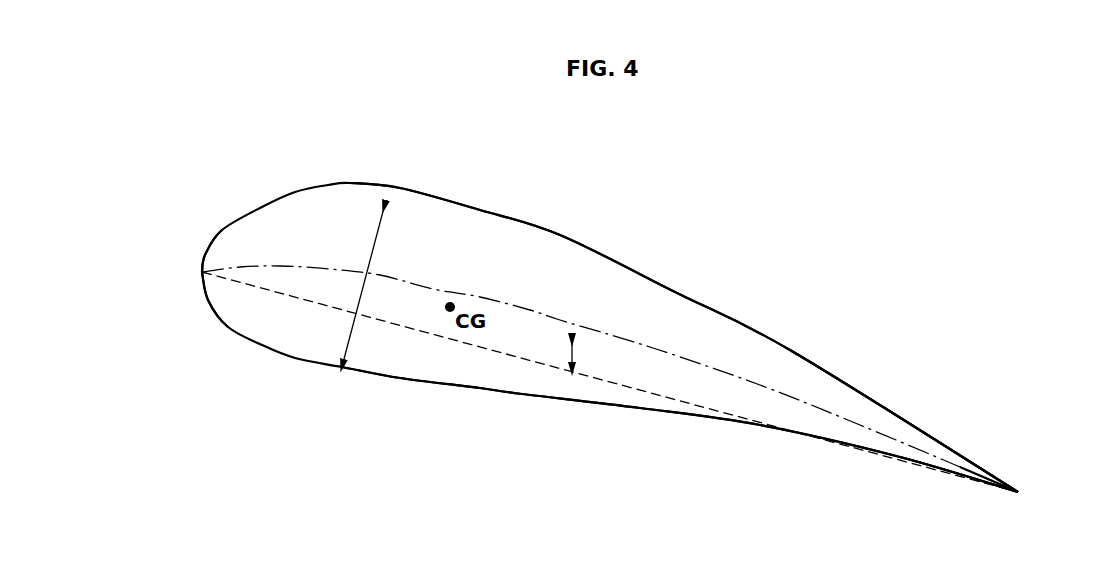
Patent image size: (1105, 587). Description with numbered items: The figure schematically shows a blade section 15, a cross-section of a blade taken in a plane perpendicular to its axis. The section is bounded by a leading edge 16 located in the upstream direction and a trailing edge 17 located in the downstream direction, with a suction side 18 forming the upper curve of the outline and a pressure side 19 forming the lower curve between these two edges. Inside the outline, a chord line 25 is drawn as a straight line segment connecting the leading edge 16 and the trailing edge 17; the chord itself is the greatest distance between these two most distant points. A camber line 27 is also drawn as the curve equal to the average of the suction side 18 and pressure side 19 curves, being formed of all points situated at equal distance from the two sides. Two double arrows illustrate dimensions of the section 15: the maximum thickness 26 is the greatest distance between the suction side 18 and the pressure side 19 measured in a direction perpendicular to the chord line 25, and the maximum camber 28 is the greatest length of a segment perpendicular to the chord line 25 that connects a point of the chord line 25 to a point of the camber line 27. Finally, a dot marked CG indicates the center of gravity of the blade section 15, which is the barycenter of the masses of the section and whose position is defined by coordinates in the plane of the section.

The blade section 15 is at (685, 230).
The leading edge 16 is at (199, 274).
The trailing edge 17 is at (1022, 494).
The suction side 18 is at (566, 231).
The pressure side 19 is at (524, 399).
The chord line 25 is at (505, 354).
The maximum thickness 26 is at (365, 292).
The camber line 27 is at (435, 286).
The maximum camber 28 is at (583, 347).